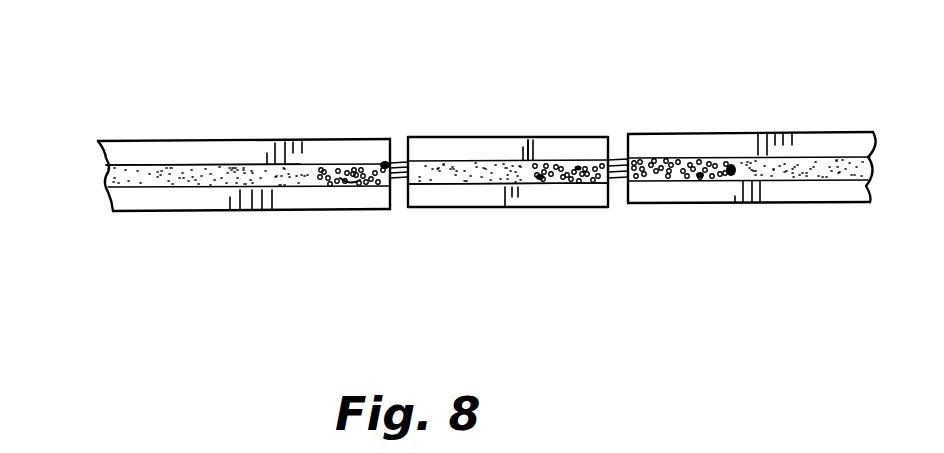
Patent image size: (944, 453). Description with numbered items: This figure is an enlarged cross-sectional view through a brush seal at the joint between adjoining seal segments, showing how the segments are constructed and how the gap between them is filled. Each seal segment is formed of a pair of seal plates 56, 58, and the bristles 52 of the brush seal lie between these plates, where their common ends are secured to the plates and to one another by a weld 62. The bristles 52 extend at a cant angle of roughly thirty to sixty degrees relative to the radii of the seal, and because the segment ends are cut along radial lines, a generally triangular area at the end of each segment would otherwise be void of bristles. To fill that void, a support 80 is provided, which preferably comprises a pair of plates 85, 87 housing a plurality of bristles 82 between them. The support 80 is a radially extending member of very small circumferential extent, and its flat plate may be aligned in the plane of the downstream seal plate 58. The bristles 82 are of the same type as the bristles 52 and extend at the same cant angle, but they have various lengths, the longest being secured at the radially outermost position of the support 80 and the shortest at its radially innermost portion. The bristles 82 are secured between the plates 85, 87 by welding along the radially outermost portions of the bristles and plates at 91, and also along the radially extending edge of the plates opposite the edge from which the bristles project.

The bristles 52 is at (345, 186).
The seal plate 56 is at (650, 196).
The seal plate 58 is at (695, 134).
The weld 62 is at (165, 182).
The support 80 is at (488, 137).
The bristles 82 is at (606, 180).
The plate 85 is at (553, 165).
The plate 87 is at (478, 200).
The weld 91 is at (388, 162).